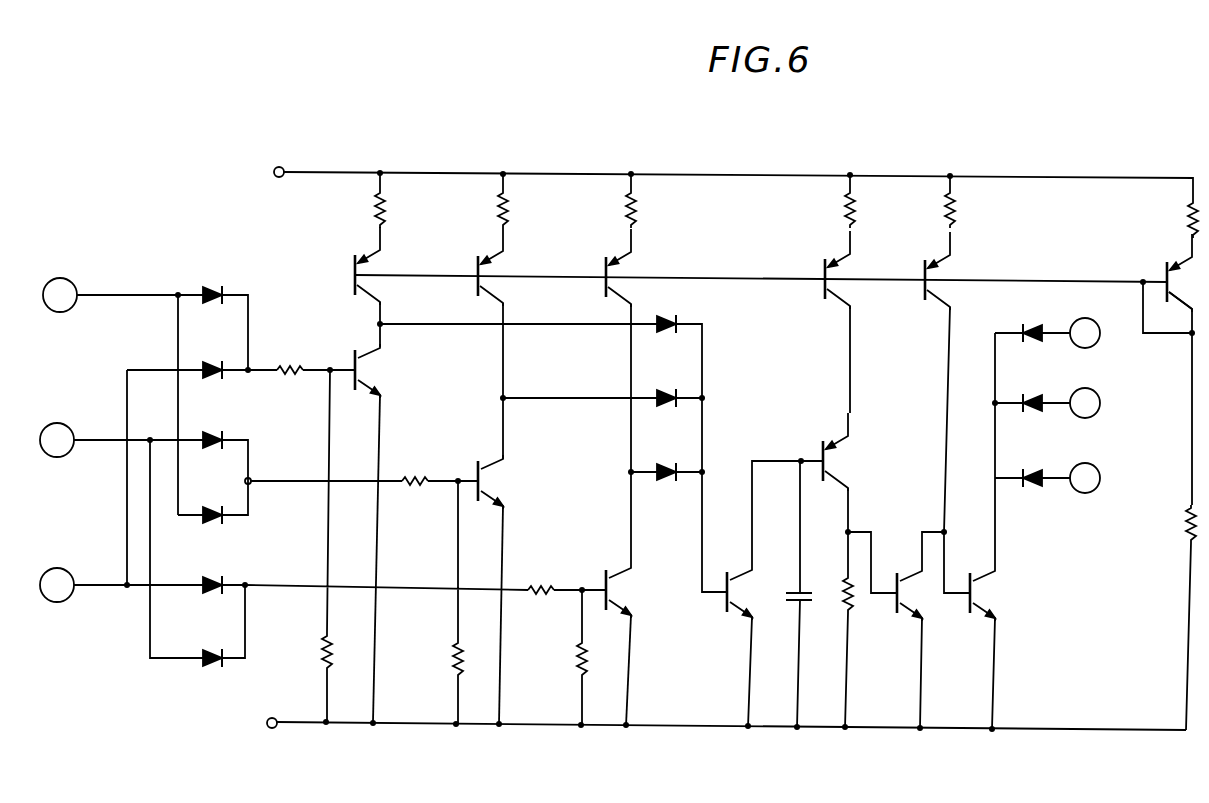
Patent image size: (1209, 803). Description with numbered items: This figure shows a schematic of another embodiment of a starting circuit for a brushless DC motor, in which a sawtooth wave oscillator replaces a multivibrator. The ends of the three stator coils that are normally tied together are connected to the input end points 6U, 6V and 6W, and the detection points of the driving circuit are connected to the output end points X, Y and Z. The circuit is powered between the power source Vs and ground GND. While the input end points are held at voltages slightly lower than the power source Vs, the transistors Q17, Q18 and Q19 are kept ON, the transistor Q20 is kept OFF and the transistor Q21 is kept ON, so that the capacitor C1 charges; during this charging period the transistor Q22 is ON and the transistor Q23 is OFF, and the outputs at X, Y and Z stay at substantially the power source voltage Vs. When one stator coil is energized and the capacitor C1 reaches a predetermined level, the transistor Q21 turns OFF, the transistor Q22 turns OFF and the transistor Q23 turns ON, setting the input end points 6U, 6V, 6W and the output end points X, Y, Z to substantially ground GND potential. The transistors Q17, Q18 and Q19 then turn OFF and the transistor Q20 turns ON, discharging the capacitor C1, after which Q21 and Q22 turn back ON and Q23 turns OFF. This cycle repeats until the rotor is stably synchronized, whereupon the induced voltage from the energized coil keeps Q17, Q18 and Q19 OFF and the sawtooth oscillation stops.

The transistor Q17 is at (617, 570).
The transistor Q18 is at (488, 462).
The transistor Q19 is at (365, 352).
The transistor Q20 is at (737, 612).
The transistor Q21 is at (842, 440).
The transistor Q22 is at (905, 613).
The transistor Q23 is at (988, 613).
The capacitor C1 is at (789, 595).
The input end point 6U is at (68, 282).
The input end point 6V is at (65, 427).
The input end point 6W is at (65, 572).
The power source Vs is at (718, 180).
The ground GND is at (705, 722).
The output end point X is at (1047, 333).
The output end point Y is at (1046, 403).
The output end point Z is at (1047, 478).